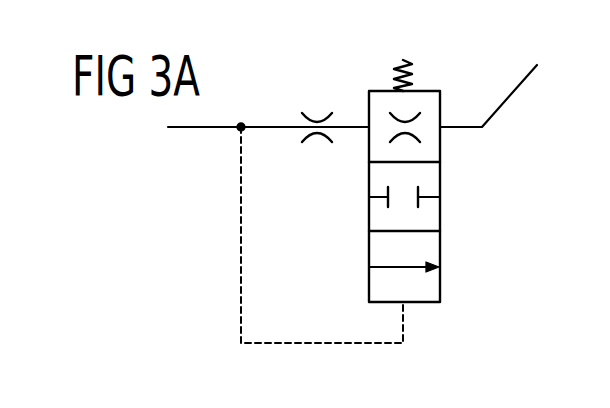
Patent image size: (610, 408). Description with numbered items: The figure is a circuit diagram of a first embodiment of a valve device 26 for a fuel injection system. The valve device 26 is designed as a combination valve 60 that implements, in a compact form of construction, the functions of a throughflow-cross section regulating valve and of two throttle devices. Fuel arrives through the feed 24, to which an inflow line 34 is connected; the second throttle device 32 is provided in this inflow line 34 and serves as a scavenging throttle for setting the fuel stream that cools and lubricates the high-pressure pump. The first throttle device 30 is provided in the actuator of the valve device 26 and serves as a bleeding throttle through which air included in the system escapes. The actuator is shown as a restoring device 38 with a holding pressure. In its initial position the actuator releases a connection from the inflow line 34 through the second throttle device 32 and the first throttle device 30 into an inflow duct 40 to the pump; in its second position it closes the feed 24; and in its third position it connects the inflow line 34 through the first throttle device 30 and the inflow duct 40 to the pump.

The feed 24 is at (215, 127).
The inflow line 34 is at (278, 127).
The second throttle device 32 is at (317, 133).
The valve device 26 is at (493, 243).
The first throttle device 30 is at (408, 120).
The restoring device 38 is at (393, 70).
The combination valve 60 is at (440, 177).
The inflow duct 40 is at (505, 100).